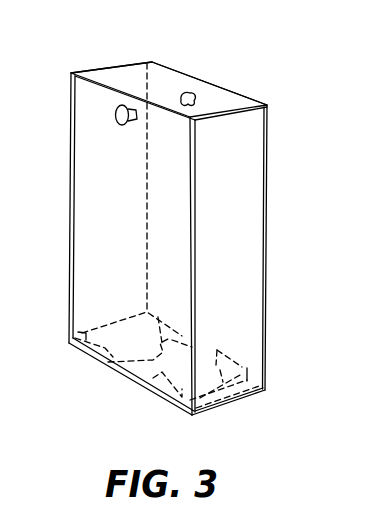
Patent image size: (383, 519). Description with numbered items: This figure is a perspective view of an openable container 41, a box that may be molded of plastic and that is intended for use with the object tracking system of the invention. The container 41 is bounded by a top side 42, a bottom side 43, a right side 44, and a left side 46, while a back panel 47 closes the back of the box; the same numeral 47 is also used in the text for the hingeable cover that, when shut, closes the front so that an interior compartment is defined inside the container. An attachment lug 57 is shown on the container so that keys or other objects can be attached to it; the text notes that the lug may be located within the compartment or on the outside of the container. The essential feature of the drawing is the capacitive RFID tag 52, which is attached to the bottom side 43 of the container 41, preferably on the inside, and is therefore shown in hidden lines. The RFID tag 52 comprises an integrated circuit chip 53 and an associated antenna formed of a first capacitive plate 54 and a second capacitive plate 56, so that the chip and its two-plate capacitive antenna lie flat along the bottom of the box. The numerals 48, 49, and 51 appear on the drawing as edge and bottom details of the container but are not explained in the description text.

The openable container 41 is at (213, 58).
The top side 42 is at (122, 75).
The attachment lug 57 is at (181, 93).
The rear edge 48 is at (268, 145).
The right side 44 is at (233, 165).
The left side 46 is at (86, 148).
The back panel 47 is at (95, 225).
The bottom edge 51 is at (125, 373).
The RFID tag 52 is at (92, 301).
The first capacitive plate 54 is at (137, 318).
The integrated circuit chip 53 is at (158, 317).
The bottom flap 49 is at (203, 348).
The second capacitive plate 56 is at (203, 367).
The bottom side 43 is at (221, 394).